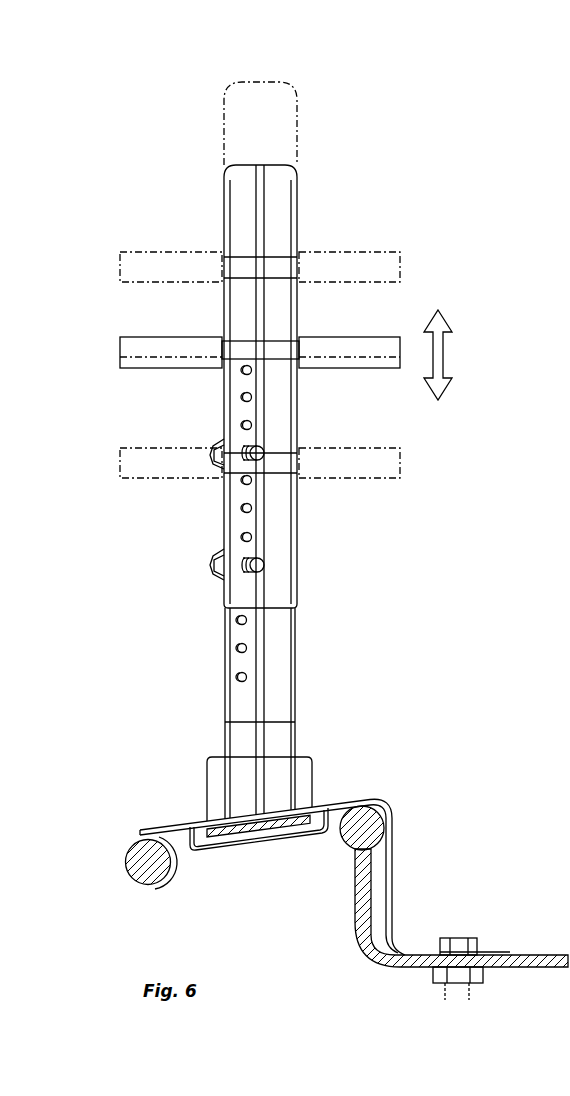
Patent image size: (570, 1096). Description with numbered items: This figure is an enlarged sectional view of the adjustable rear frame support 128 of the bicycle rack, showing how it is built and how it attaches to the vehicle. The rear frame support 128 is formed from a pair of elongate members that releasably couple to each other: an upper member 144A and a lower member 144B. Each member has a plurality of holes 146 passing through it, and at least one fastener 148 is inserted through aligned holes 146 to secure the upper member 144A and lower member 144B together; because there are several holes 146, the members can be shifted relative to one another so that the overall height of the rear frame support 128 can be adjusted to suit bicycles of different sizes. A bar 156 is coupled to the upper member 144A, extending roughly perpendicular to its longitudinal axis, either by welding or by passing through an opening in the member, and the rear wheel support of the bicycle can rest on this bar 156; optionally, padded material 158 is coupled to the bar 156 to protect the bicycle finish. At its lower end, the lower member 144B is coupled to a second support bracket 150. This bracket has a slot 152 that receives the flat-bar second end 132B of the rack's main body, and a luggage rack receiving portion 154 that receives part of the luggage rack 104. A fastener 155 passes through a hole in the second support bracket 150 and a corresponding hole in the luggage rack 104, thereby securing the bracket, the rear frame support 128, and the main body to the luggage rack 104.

The luggage rack 104 is at (147, 863).
The rear frame support 128 is at (443, 262).
The second end 132B is at (270, 837).
The upper member 144A is at (278, 201).
The lower member 144B is at (275, 655).
The holes 146 is at (243, 397).
The fastener 148 is at (262, 451).
The second support bracket 150 is at (378, 797).
The slot 152 is at (233, 850).
The luggage rack receiving portion 154 is at (151, 894).
The fastener 155 is at (458, 938).
The bar 156 is at (256, 350).
The padded material 158 is at (337, 348).